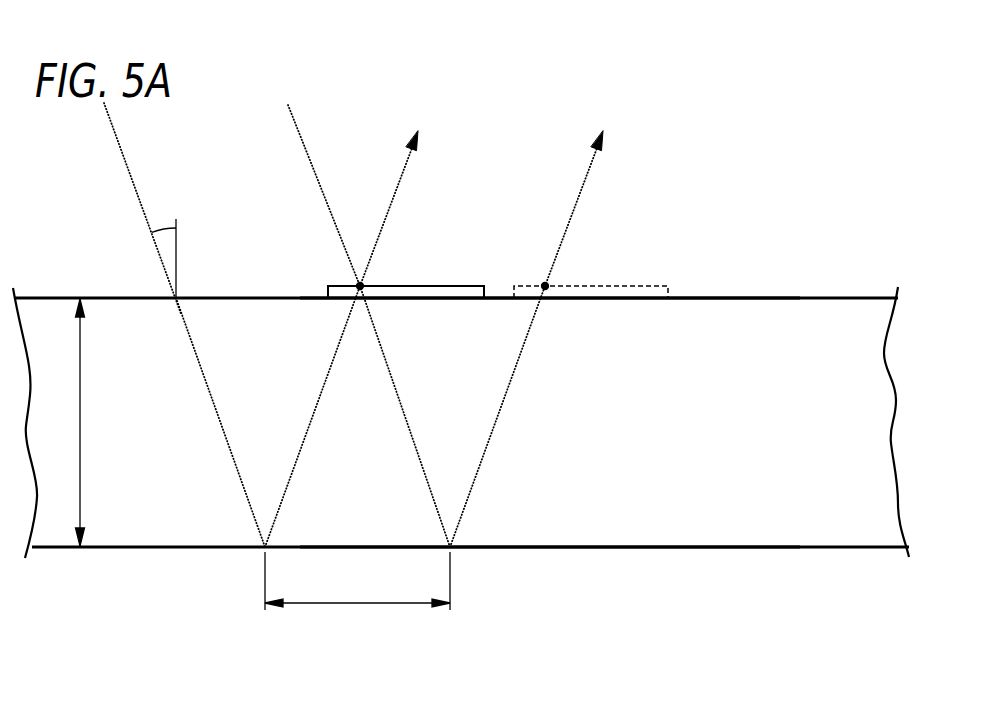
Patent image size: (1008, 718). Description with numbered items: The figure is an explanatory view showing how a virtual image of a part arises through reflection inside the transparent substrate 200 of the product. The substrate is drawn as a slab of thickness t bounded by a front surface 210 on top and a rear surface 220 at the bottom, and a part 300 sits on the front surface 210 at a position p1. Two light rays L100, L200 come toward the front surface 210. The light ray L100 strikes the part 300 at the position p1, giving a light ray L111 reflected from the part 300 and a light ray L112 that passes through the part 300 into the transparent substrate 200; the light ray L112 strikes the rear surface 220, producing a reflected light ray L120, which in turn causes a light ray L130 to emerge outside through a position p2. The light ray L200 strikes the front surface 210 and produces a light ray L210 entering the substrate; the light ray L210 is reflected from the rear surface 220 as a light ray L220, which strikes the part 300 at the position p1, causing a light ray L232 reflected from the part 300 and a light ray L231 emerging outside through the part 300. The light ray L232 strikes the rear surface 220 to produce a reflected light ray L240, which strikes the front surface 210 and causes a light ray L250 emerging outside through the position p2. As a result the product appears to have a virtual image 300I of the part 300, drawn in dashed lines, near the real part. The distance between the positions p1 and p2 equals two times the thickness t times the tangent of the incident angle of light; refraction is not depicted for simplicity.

The transparent substrate 200 is at (818, 340).
The front surface 210 is at (742, 297).
The rear surface 220 is at (727, 548).
The part 300 is at (445, 290).
The virtual image 300I is at (635, 282).
The light ray L100 is at (298, 132).
The light ray L200 is at (124, 158).
The light ray L111 is at (456, 208).
The light ray L231 is at (395, 194).
The light ray L130 is at (645, 208).
The light ray L250 is at (580, 195).
The light ray L210 is at (232, 462).
The light ray L220 is at (333, 360).
The light ray L112 is at (371, 416).
The light ray L232 is at (428, 487).
The light ray L120 is at (551, 416).
The light ray L240 is at (496, 428).
The position p1 is at (383, 268).
The position p2 is at (568, 268).
The thickness t is at (88, 422).